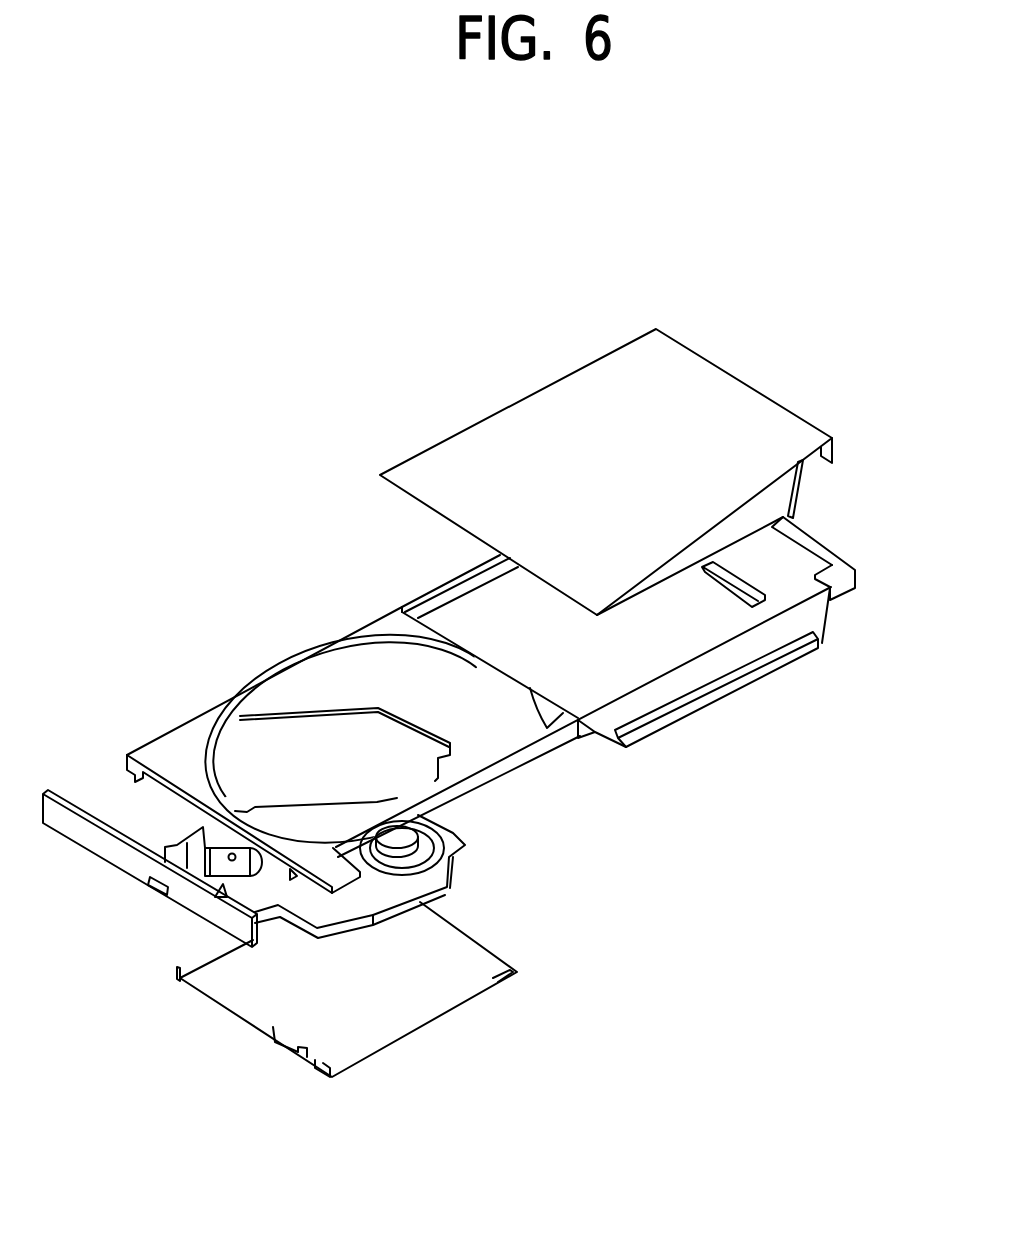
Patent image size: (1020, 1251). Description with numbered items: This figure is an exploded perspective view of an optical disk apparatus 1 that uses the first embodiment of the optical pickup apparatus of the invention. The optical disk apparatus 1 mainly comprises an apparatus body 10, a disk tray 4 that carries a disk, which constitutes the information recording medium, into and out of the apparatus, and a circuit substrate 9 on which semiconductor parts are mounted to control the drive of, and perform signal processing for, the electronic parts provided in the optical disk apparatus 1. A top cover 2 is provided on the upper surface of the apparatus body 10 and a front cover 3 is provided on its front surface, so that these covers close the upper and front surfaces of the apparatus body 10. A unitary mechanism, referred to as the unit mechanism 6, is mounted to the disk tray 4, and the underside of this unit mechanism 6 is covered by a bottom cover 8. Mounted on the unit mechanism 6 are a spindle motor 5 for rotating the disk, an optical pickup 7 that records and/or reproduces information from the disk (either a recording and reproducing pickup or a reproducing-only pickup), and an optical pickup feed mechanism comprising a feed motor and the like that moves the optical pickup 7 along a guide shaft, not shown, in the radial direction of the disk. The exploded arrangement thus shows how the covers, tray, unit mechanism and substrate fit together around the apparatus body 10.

The optical disk apparatus 1 is at (205, 467).
The top cover 2 is at (737, 432).
The front cover 3 is at (81, 836).
The disk tray 4 is at (328, 687).
The spindle motor 5 is at (440, 840).
The unit mechanism 6 is at (423, 878).
The optical pickup 7 is at (180, 843).
The bottom cover 8 is at (385, 1008).
The circuit substrate 9 is at (800, 577).
The apparatus body 10 is at (693, 672).